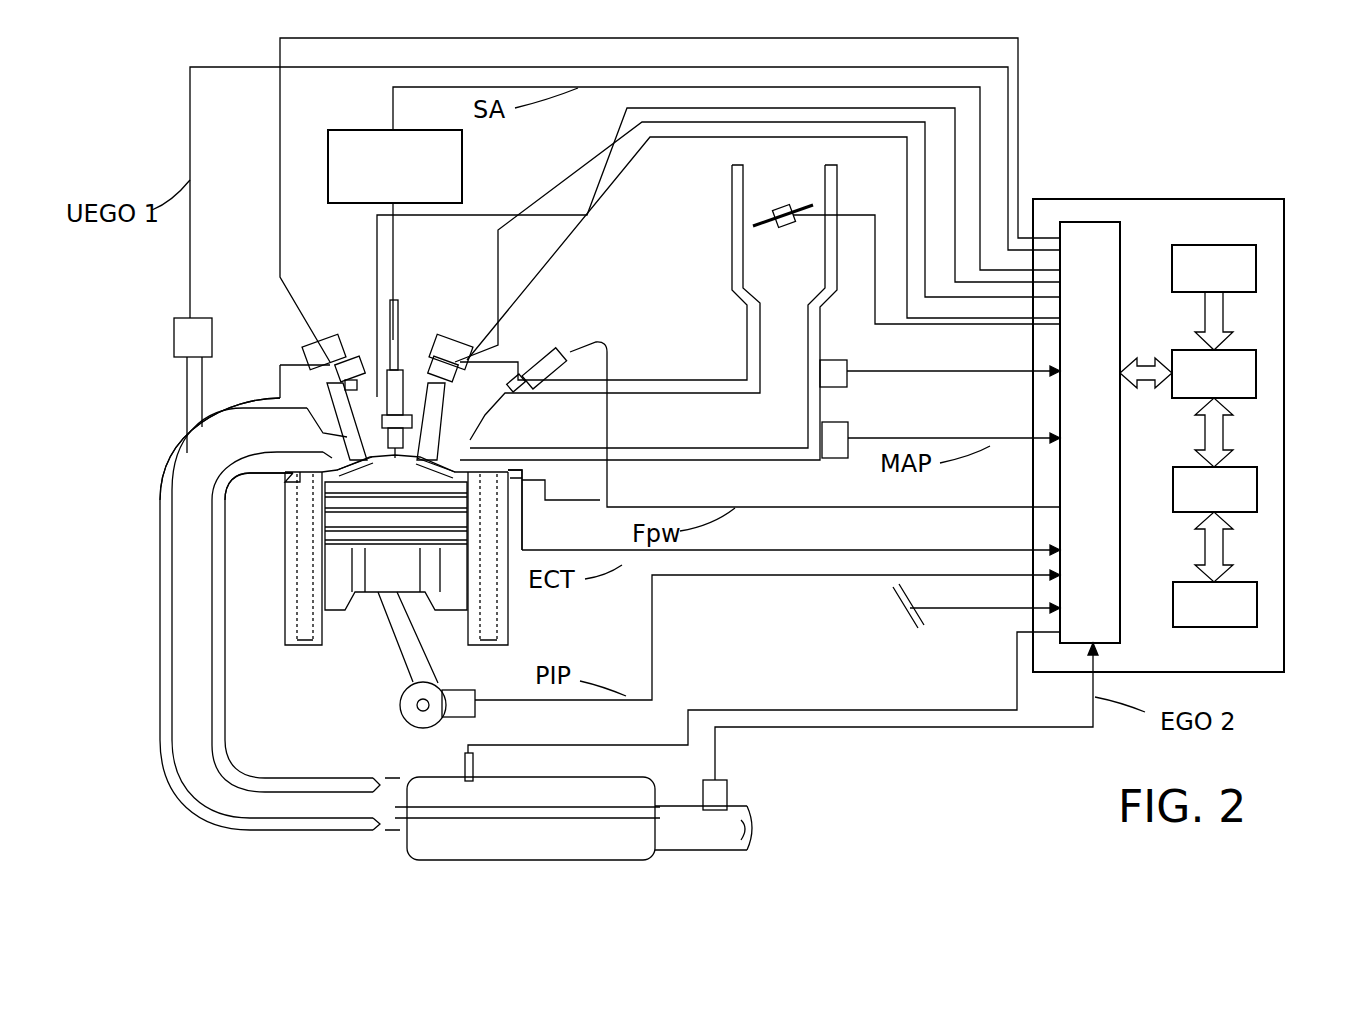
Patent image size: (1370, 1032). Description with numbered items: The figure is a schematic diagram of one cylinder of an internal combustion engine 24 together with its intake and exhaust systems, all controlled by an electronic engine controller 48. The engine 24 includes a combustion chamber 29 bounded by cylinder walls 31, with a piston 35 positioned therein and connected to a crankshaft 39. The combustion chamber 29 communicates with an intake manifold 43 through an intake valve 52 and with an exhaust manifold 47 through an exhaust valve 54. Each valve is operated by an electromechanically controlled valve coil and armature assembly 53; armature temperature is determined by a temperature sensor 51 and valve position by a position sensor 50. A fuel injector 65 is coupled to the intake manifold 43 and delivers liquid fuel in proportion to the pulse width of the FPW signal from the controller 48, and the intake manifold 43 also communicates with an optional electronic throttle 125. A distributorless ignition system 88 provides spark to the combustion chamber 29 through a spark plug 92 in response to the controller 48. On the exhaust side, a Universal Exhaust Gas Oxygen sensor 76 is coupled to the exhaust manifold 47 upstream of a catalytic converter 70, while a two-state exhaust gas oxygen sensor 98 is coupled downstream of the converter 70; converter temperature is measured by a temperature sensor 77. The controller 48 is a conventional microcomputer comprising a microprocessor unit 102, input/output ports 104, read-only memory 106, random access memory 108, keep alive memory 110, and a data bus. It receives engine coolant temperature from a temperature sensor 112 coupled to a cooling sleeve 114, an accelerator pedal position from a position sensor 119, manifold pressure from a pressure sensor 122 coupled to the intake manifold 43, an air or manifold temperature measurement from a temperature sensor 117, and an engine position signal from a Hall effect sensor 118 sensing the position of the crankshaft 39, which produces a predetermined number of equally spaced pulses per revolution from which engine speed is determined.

The internal combustion engine 24 is at (277, 352).
The combustion chamber 29 is at (380, 472).
The cylinder walls 31 is at (332, 636).
The piston 35 is at (378, 600).
The crankshaft 39 is at (410, 708).
The intake manifold 43 is at (755, 441).
The exhaust manifold 47 is at (165, 488).
The electronic engine controller 48 is at (1200, 198).
The position sensor 50 is at (357, 340).
The temperature sensor 51 is at (433, 338).
The intake valve 52 is at (472, 437).
The valve coil and armature assembly 53 is at (326, 330).
The exhaust valve 54 is at (345, 432).
The fuel injector 65 is at (553, 346).
The catalytic converter 70 is at (500, 850).
The Universal Exhaust Gas Oxygen (UEGO) sensor 76 is at (176, 340).
The temperature sensor 77 is at (462, 766).
The distributorless ignition system 88 is at (463, 190).
The spark plug 92 is at (405, 342).
The two-state exhaust gas oxygen sensor 98 is at (748, 776).
The microprocessor unit (CPU) 102 is at (1257, 380).
The input/output ports 104 is at (1122, 268).
The read-only memory 106 is at (1257, 276).
The random access memory 108 is at (1257, 490).
The keep alive memory 110 is at (1257, 606).
The temperature sensor 112 is at (520, 490).
The cooling sleeve 114 is at (300, 662).
The temperature sensor 117 is at (852, 364).
The Hall effect sensor 118 is at (478, 712).
The position sensor 119 is at (880, 626).
The pressure sensor 122 is at (840, 422).
The electronic throttle 125 is at (770, 198).